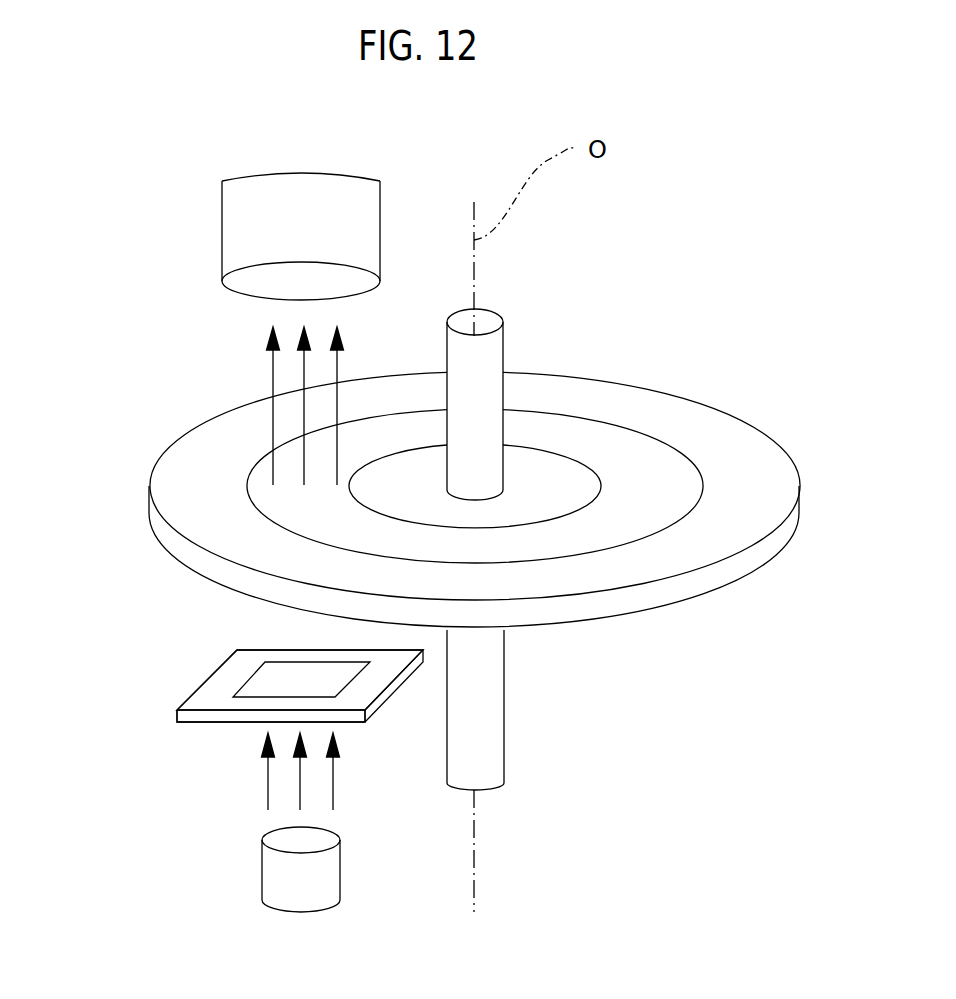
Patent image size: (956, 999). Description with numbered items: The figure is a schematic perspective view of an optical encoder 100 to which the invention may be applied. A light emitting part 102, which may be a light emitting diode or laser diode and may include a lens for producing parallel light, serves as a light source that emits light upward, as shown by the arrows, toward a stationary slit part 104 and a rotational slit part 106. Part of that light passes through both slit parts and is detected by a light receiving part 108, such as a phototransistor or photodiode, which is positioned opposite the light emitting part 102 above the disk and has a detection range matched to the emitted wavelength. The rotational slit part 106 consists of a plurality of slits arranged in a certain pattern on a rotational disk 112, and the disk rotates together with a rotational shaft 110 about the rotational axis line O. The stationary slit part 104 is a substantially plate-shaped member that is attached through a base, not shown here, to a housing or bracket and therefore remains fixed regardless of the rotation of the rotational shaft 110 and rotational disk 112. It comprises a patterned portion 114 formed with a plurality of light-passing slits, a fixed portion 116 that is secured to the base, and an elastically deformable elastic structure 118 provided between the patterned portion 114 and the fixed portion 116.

The optical encoder 100 is at (495, 431).
The light emitting part 102 is at (262, 866).
The stationary slit part 104 is at (200, 683).
The rotational slit part 106 is at (622, 470).
The light receiving part 108 is at (220, 237).
The rotational shaft 110 is at (505, 358).
The rotational disk 112 is at (723, 452).
The patterned portion 114 is at (267, 698).
The fixed portion 116 is at (198, 698).
The elastic structure 118 is at (228, 683).